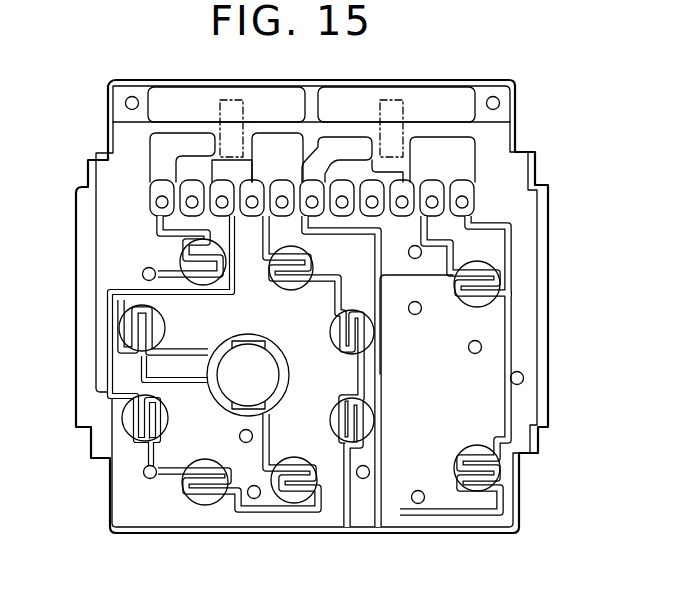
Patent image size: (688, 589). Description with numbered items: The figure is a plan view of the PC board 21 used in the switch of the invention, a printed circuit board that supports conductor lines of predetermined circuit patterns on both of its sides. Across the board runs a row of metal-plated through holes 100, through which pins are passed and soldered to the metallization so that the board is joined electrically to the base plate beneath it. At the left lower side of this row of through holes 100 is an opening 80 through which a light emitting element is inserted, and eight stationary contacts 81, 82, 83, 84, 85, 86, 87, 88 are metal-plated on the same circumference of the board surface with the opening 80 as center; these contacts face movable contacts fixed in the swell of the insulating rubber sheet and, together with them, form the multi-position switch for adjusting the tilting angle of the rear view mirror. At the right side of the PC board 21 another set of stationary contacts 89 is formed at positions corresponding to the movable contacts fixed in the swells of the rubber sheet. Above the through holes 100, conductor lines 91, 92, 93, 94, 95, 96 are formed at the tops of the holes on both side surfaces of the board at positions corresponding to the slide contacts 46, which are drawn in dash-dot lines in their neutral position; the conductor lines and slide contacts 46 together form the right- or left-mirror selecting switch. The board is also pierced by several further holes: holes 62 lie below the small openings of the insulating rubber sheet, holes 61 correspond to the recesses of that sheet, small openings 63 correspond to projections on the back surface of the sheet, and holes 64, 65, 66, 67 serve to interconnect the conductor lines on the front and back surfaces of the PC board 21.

The PC board 21 is at (527, 112).
The slide contacts 46 is at (226, 100).
The holes 61 is at (412, 315).
The holes 62 is at (142, 272).
The small openings 63 is at (409, 252).
The hole 64 is at (125, 100).
The hole 65 is at (492, 96).
The hole 66 is at (363, 479).
The hole 67 is at (239, 436).
The opening 80 is at (262, 387).
The stationary contact 81 is at (178, 262).
The stationary contact 82 is at (206, 505).
The stationary contact 83 is at (372, 416).
The stationary contact 84 is at (124, 418).
The stationary contact 85 is at (290, 284).
The stationary contact 86 is at (292, 503).
The stationary contact 87 is at (332, 331).
The stationary contact 88 is at (165, 327).
The stationary contacts 89 is at (470, 304).
The conductor line 91 is at (278, 100).
The conductor line 92 is at (333, 96).
The conductor line 93 is at (178, 140).
The conductor line 94 is at (255, 150).
The conductor line 95 is at (358, 140).
The conductor line 96 is at (432, 148).
The metal-plated through holes 100 is at (148, 201).